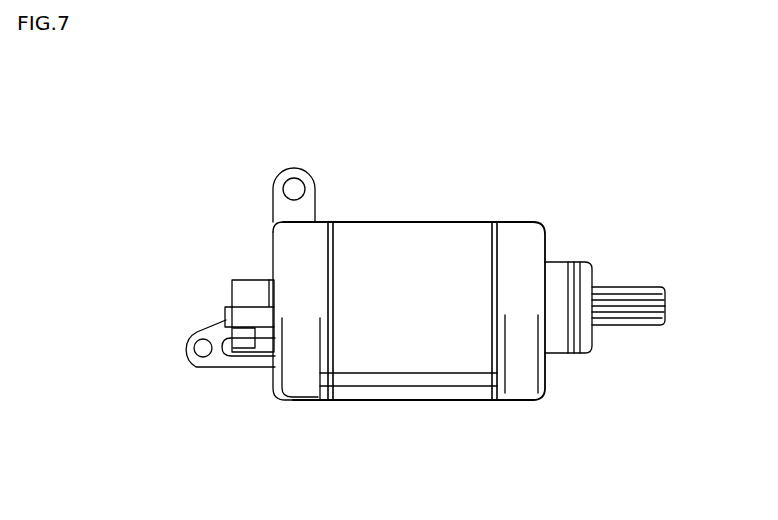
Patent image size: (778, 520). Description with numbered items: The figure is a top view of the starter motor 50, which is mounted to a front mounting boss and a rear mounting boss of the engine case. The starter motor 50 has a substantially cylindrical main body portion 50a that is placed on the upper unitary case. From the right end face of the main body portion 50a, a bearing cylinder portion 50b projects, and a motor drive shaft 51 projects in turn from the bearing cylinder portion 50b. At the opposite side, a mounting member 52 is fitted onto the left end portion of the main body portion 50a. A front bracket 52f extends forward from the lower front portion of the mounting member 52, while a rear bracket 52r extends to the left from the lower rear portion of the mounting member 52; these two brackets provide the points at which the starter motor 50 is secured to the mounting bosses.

The starter motor 50 is at (445, 262).
The main body portion 50a is at (407, 400).
The bearing cylinder portion 50b is at (567, 355).
The motor drive shaft 51 is at (630, 283).
The mounting member 52 is at (232, 233).
The front bracket 52f is at (292, 167).
The rear bracket 52r is at (190, 358).